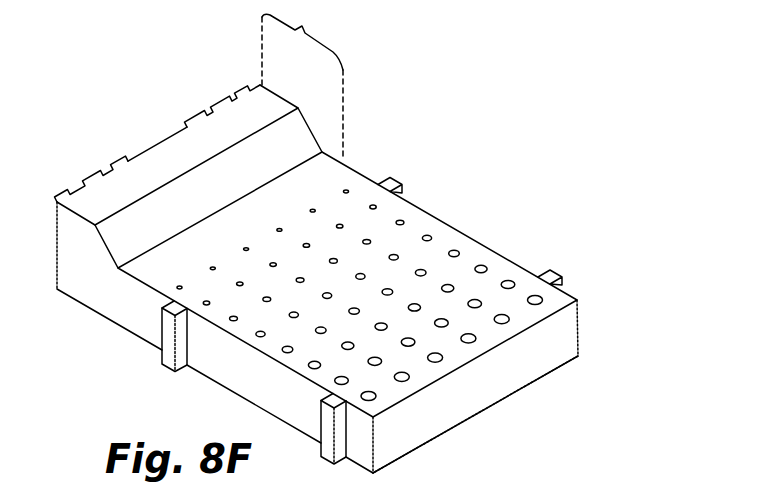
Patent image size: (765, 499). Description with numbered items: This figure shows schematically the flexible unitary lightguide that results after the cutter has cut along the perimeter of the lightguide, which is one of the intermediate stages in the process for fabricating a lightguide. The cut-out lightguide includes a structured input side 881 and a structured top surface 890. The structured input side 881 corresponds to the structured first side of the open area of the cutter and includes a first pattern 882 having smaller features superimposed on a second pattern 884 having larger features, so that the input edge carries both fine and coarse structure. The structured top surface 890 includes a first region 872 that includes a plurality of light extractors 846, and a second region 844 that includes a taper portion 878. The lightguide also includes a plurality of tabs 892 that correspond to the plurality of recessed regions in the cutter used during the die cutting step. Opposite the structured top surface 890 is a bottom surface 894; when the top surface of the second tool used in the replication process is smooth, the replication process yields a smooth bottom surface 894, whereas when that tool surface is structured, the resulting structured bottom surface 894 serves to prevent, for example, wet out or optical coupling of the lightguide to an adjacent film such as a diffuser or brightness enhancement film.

The second region 844 is at (303, 79).
The light extractors 846 is at (512, 282).
The first region 872 is at (415, 213).
The taper portion 878 is at (115, 242).
The structured input side 881 is at (162, 142).
The first pattern 882 is at (242, 96).
The second pattern 884 is at (104, 172).
The structured top surface 890 is at (470, 258).
The tabs 892 is at (169, 360).
The bottom surface 894 is at (465, 393).